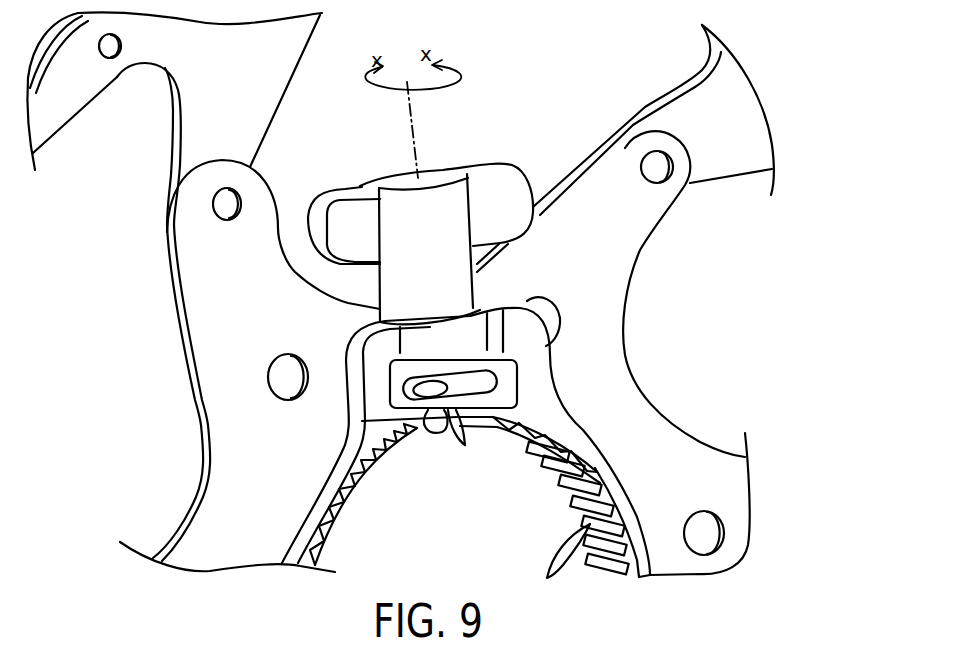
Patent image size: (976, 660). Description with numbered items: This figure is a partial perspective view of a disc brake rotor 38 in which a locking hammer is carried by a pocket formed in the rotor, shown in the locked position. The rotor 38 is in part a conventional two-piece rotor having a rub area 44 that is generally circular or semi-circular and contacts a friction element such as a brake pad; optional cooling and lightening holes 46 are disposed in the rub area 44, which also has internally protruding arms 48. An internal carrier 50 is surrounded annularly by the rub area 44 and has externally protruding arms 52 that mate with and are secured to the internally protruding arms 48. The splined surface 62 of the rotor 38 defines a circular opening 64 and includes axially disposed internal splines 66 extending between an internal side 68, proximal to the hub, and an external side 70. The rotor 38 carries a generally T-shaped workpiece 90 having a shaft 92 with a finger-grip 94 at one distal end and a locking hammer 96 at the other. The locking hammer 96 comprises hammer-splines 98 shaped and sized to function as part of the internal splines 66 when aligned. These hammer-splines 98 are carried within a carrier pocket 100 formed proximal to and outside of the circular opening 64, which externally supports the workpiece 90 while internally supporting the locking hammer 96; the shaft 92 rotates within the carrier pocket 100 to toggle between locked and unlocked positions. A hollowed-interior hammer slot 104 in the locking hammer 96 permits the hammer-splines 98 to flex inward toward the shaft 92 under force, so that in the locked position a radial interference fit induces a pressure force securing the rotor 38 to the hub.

The rotor 38 is at (289, 55).
The rub area 44 is at (61, 113).
The cooling and lightening holes 46 is at (115, 58).
The internally protruding arms 48 is at (259, 127).
The internal carrier 50 is at (223, 475).
The externally protruding arms 52 is at (196, 272).
The splined surface 62 is at (550, 458).
The circular opening 64 is at (445, 521).
The internal splines 66 is at (560, 567).
The internal side 68 is at (607, 488).
The external side 70 is at (573, 497).
The workpiece 90 is at (434, 190).
The shaft 92 is at (391, 302).
The finger-grip 94 is at (512, 188).
The locking hammer 96 is at (488, 320).
The hammer-splines 98 is at (445, 420).
The carrier pocket 100 is at (540, 388).
The hammer slot 104 is at (476, 378).